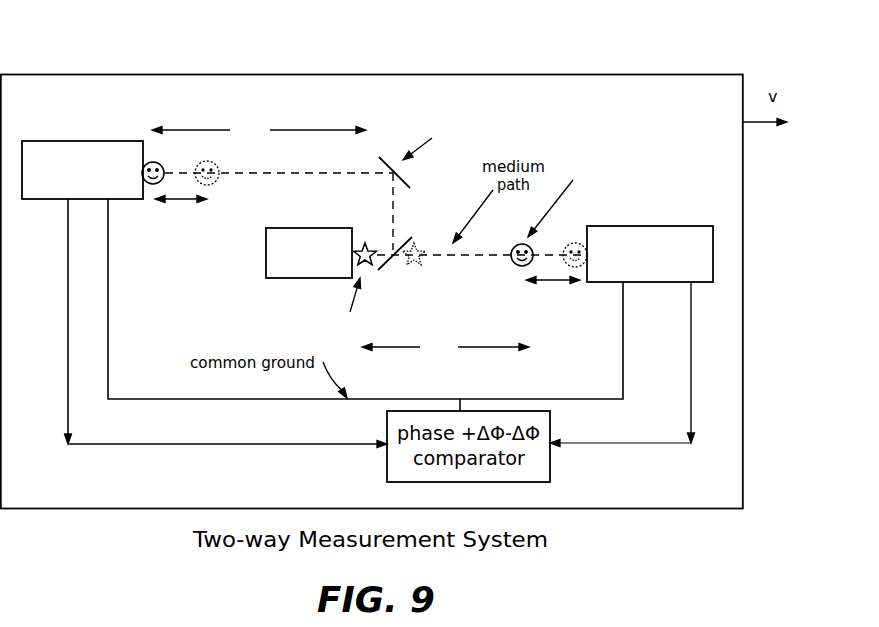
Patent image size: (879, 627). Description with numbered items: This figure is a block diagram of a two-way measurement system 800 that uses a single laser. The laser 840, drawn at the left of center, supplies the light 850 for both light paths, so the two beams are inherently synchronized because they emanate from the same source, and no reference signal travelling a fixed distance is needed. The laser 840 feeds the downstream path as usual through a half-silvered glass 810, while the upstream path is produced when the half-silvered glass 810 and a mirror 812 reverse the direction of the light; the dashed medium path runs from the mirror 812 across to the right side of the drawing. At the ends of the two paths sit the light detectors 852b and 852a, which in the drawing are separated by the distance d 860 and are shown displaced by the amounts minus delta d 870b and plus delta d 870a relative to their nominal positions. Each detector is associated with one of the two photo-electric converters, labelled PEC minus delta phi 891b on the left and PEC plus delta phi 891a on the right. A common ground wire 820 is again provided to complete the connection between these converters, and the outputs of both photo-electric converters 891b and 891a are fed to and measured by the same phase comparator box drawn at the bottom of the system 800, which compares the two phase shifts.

The two-way measurement system 800 is at (134, 58).
The photo-electric converter 891b is at (43, 141).
The light detector (left) 852b is at (150, 162).
The distance d between detectors 860 is at (300, 129).
The mirror 812 is at (465, 117).
The displacement -Δd of left detector 870b is at (162, 203).
The laser 840 is at (265, 247).
The light pulse 850 is at (365, 242).
The common ground wire 820 is at (325, 314).
The half-silvered glass 810 is at (403, 271).
The light detector (right) 852a is at (527, 243).
The photo-electric converter 891a is at (657, 226).
The displacement +Δd of right detector 870a is at (570, 298).